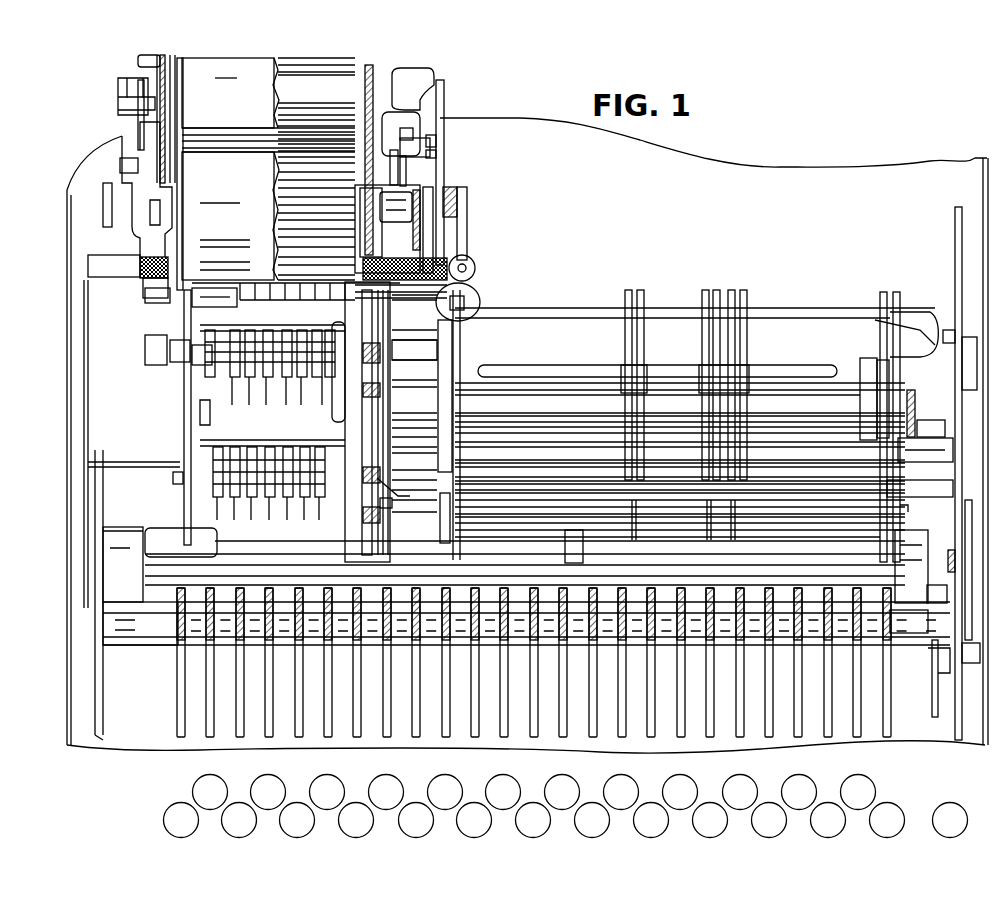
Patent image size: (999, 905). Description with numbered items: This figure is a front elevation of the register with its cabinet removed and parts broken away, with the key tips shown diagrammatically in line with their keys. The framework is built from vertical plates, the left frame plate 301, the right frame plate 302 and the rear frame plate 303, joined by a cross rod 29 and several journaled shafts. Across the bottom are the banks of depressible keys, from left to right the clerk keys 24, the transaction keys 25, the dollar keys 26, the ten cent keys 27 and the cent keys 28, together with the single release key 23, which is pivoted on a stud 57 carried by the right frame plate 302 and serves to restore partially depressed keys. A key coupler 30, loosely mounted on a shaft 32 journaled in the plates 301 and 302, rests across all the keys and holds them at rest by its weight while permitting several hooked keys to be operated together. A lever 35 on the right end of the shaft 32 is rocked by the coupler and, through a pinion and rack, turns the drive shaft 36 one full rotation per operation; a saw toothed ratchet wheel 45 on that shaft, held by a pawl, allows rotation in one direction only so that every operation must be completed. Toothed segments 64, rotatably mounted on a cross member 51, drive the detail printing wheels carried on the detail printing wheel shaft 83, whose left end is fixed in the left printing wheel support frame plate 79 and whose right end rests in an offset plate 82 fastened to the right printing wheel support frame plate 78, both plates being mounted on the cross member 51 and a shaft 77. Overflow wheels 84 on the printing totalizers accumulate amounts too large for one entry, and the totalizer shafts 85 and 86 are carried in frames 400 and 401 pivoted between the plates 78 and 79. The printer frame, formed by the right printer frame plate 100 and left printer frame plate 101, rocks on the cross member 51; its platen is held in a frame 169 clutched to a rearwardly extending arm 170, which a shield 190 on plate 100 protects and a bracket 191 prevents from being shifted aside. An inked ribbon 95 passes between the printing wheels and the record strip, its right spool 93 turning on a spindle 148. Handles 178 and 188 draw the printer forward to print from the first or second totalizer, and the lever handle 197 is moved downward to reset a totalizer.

The release key 23 is at (938, 806).
The clerk keys 24 is at (180, 805).
The transaction keys 25 is at (254, 787).
The dollar keys 26 is at (340, 820).
The ten cent keys 27 is at (462, 775).
The cent keys 28 is at (652, 803).
The cross rod 29 is at (158, 645).
The key coupler 30 is at (170, 600).
The key coupler shaft 32 is at (153, 527).
The lever 35 is at (933, 553).
The drive shaft 36 is at (848, 458).
The saw toothed ratchet wheel 45 is at (912, 392).
The cross member 51 is at (930, 440).
The stud 57 is at (927, 592).
The toothed segment 64 is at (340, 553).
The shaft 77 is at (900, 498).
The right printing wheel support frame plate 78 is at (398, 500).
The left printing wheel support frame plate 79 is at (187, 528).
The offset plate 82 is at (348, 372).
The detail printing wheel shaft 83 is at (228, 300).
The overflow wheels 84 is at (301, 405).
The totalizer shaft 85 is at (175, 362).
The totalizer shaft 86 is at (180, 487).
The right spool 93 is at (476, 270).
The inked ribbon 95 is at (160, 250).
The right printer frame plate 100 is at (438, 145).
The left printer frame plate 101 is at (140, 100).
The spindle 148 is at (480, 300).
The platen frame 169 is at (360, 240).
The arm 170 is at (378, 215).
The handle 178 is at (440, 100).
The handle 188 is at (420, 75).
The shield 190 is at (388, 128).
The bracket 191 is at (436, 158).
The lever handle 197 is at (372, 78).
The left frame plate 301 is at (100, 700).
The right frame plate 302 is at (955, 735).
The rear frame plate 303 is at (824, 308).
The frame 400 is at (200, 428).
The frame 401 is at (250, 565).